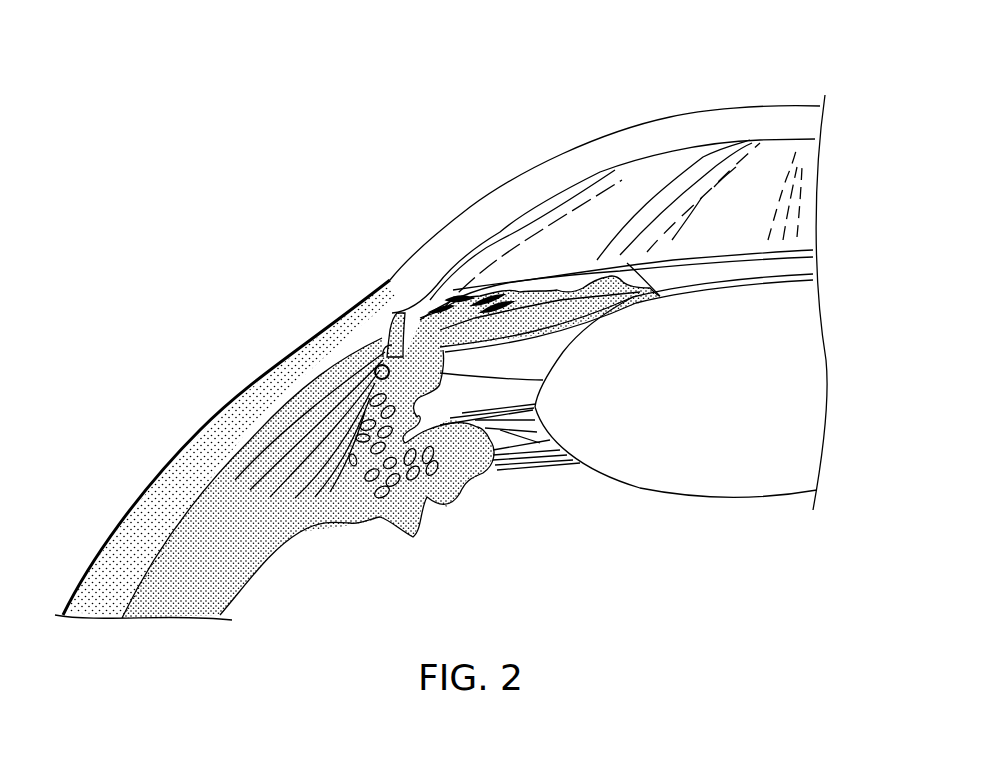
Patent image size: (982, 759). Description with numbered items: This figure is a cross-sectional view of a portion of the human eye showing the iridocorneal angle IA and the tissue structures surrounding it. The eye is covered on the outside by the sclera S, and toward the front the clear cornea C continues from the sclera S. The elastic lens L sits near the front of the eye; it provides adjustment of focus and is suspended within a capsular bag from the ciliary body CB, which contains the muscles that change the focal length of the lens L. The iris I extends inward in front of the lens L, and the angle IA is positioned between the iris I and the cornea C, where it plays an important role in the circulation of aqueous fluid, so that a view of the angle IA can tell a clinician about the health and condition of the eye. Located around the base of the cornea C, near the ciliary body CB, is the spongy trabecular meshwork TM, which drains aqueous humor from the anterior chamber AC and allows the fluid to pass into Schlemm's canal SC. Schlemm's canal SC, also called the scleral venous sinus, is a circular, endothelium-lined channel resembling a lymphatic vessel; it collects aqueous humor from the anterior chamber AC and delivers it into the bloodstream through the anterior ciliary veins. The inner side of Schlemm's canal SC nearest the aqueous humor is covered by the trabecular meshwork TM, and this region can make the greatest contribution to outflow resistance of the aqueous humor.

The cornea C is at (746, 120).
The sclera S is at (93, 561).
The anterior chamber AC is at (769, 191).
The iris I is at (543, 326).
The trabecular meshwork TM is at (573, 268).
The Schlemm's canal SC is at (394, 314).
The iridocorneal angle IA is at (390, 358).
The ciliary body CB is at (475, 478).
The lens L is at (676, 397).